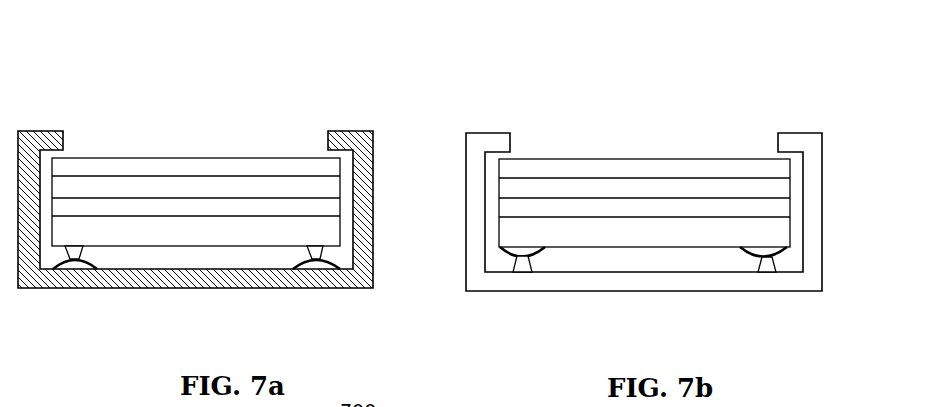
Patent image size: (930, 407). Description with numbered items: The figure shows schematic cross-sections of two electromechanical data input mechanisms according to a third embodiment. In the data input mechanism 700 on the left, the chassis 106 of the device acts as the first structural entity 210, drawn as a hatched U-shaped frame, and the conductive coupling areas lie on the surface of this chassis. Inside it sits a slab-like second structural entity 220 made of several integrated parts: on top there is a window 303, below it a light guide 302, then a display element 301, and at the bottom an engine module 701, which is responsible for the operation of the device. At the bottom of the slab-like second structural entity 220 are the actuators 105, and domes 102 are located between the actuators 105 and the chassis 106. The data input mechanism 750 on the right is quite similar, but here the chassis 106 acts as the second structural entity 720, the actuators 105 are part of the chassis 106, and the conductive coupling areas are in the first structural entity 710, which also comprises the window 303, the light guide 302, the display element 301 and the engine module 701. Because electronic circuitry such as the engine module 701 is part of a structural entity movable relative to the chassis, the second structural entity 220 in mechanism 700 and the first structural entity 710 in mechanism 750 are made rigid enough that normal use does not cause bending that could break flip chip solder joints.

In FIG. 7a, the data input mechanism 700 is at (282, 72).
In FIG. 7b, the data input mechanism 750 is at (757, 73).
In FIG. 7a, the chassis 106 is at (225, 184).
In FIG. 7b, the chassis 106 is at (670, 187).
In FIG. 7a, the first structural entity 210 is at (395, 102).
In FIG. 7b, the second structural entity 720 is at (843, 104).
In FIG. 7a, the domes 102 is at (277, 283).
In FIG. 7b, the domes 102 is at (795, 263).
In FIG. 7a, the actuators 105 is at (323, 250).
In FIG. 7b, the actuators 105 is at (765, 266).
In FIG. 7a, the second structural entity 220 is at (277, 155).
In FIG. 7b, the first structural entity 710 is at (728, 158).
In FIG. 7a, the display element 301 is at (70, 163).
In FIG. 7b, the display element 301 is at (522, 165).
In FIG. 7a, the light guide 302 is at (110, 187).
In FIG. 7b, the light guide 302 is at (562, 188).
In FIG. 7a, the window 303 is at (158, 205).
In FIG. 7b, the window 303 is at (612, 205).
In FIG. 7a, the engine module 701 is at (157, 238).
In FIG. 7b, the engine module 701 is at (613, 240).